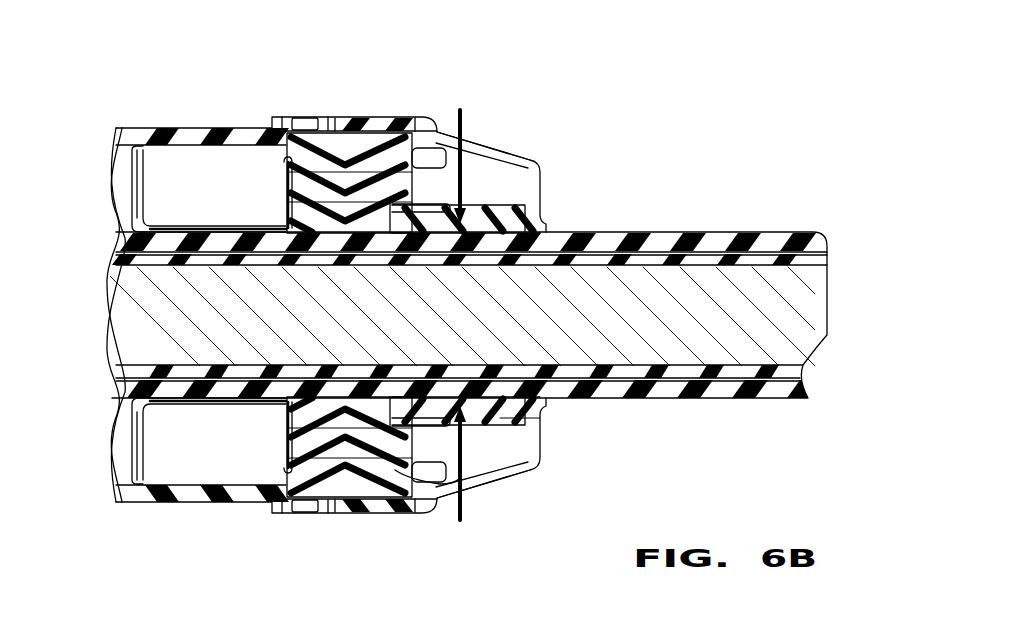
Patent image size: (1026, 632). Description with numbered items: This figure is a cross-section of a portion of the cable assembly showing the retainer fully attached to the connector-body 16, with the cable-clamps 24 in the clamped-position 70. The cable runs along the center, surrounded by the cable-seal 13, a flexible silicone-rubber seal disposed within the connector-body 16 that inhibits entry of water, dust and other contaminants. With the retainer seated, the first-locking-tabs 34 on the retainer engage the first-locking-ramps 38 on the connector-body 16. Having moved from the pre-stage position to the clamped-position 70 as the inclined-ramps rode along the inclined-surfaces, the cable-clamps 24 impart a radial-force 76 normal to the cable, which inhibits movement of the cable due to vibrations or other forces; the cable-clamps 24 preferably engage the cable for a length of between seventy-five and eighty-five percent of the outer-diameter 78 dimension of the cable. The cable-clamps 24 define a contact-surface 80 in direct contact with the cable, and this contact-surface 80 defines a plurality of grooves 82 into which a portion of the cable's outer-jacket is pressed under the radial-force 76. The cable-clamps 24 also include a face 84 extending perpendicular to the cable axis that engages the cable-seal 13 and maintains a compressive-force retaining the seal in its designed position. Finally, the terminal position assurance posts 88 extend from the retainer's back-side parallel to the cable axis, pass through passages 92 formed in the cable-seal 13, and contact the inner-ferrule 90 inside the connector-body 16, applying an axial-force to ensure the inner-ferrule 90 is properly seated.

The cable-seal 13 is at (362, 150).
The connector-body 16 is at (215, 127).
The cable-clamps 24 is at (546, 214).
The first-locking-tabs 34 is at (300, 117).
The first-locking-ramps 38 is at (345, 117).
The clamped-position 70 is at (525, 445).
The radial-force 76 is at (456, 110).
The outer-diameter 78 is at (738, 410).
The contact-surface 80 is at (523, 206).
The grooves 82 is at (478, 216).
The face 84 is at (402, 484).
The terminal position assurance posts 88 is at (262, 200).
The inner-ferrule 90 is at (300, 212).
The passages 92 is at (300, 200).